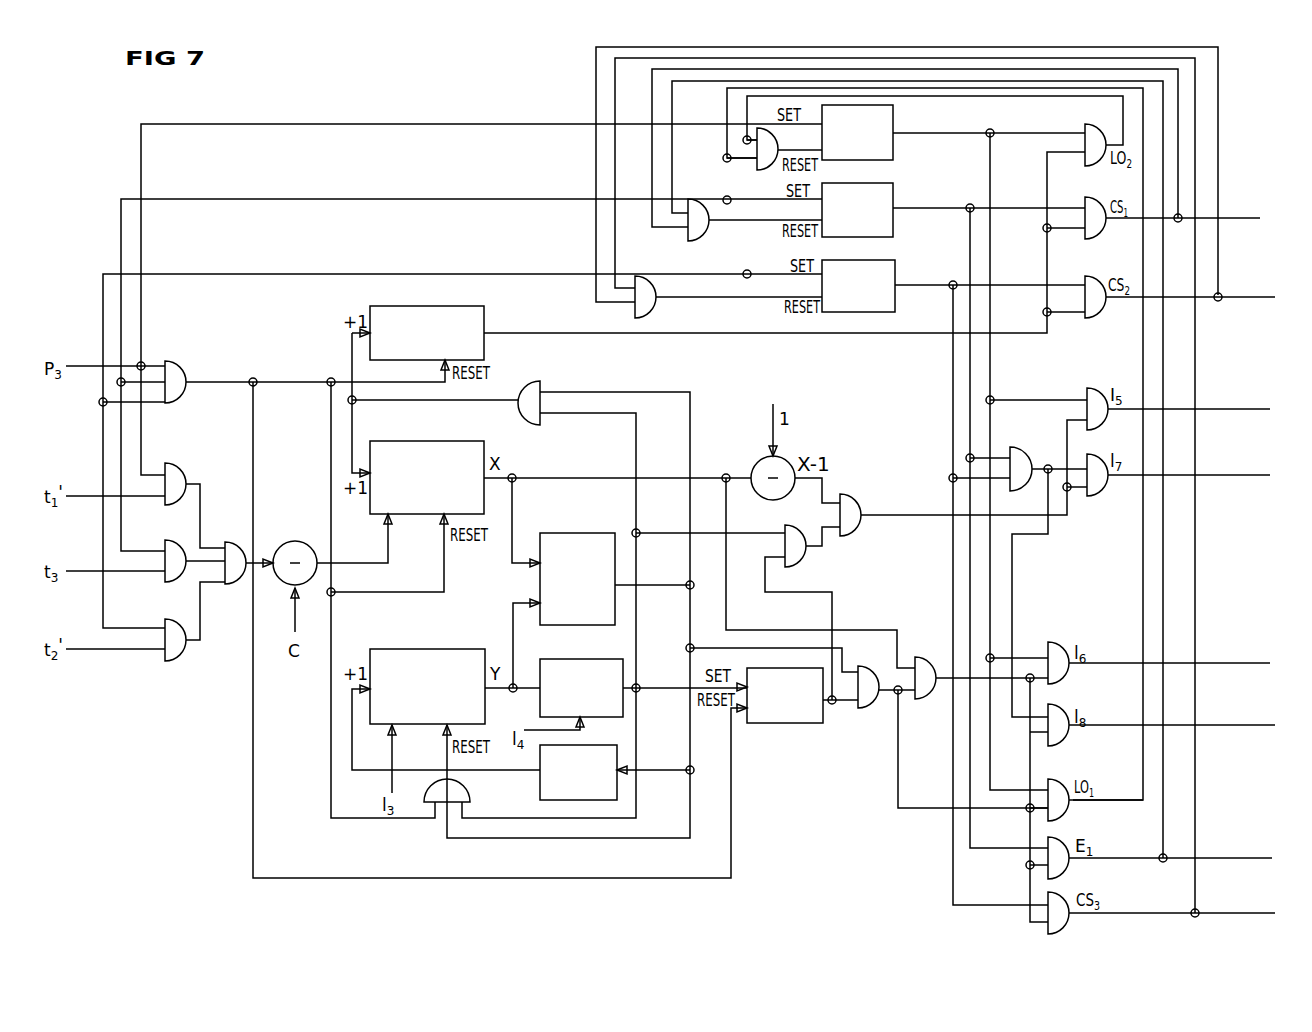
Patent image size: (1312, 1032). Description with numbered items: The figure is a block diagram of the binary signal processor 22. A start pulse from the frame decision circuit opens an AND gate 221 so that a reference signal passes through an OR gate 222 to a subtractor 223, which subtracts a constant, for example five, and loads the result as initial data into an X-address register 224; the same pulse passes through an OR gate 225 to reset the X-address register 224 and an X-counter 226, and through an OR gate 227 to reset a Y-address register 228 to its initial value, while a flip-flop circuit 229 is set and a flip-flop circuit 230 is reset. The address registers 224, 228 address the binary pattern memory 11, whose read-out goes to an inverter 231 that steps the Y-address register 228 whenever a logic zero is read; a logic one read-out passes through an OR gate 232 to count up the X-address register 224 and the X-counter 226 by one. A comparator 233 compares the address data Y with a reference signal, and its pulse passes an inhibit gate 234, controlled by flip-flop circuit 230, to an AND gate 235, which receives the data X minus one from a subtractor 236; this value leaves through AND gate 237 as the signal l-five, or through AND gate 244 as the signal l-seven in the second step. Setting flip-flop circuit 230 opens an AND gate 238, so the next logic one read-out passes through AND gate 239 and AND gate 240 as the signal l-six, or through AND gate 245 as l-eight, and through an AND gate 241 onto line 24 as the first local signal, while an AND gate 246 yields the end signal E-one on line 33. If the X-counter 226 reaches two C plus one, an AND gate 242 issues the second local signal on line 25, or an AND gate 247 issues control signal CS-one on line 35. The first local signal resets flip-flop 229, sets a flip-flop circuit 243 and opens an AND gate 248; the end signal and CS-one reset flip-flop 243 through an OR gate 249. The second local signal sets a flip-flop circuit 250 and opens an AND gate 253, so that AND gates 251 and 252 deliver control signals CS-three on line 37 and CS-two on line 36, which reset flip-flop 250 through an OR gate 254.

The binary signal processor 22 is at (355, 81).
The line 24 is at (989, 88).
The line 25 is at (1023, 97).
The E1 output line 33 is at (1240, 860).
The line 35 is at (1240, 220).
The line 36 is at (1240, 299).
The line 37 is at (1240, 915).
The binary pattern memory 11 is at (598, 533).
The AND gate 221 is at (184, 470).
The OR gate 222 is at (240, 542).
The subtractor 223 is at (292, 541).
The X-address register 224 is at (443, 441).
The OR gate 225 is at (184, 367).
The X-counter 226 is at (484, 309).
The OR gate 227 is at (467, 790).
The Y-address register 228 is at (448, 649).
The flip-flop circuit 229 is at (893, 108).
The flip-flop circuit 230 is at (788, 723).
The inverter 231 is at (589, 746).
The OR gate 232 is at (542, 381).
The comparator 233 is at (556, 660).
The inhibit gate 234 is at (803, 565).
The AND gate 235 is at (856, 494).
The subtractor 236 is at (794, 460).
The AND gate 237 is at (1094, 388).
The AND gate 238 is at (870, 708).
The AND gate 239 is at (930, 699).
The AND gate 240 is at (1052, 646).
The AND gate 241 is at (1053, 781).
The AND gate 242 is at (1084, 127).
The flip-flop circuit 243 is at (893, 185).
The AND gate 244 is at (1100, 497).
The AND gate 245 is at (1053, 709).
The AND gate 246 is at (1063, 840).
The AND gate 247 is at (1101, 200).
The AND gate 248 is at (180, 540).
The OR gate 249 is at (700, 240).
The flip-flop circuit 250 is at (895, 263).
The AND gate 251 is at (1066, 893).
The AND gate 252 is at (1103, 276).
The AND gate 253 is at (176, 619).
The OR gate 254 is at (652, 308).